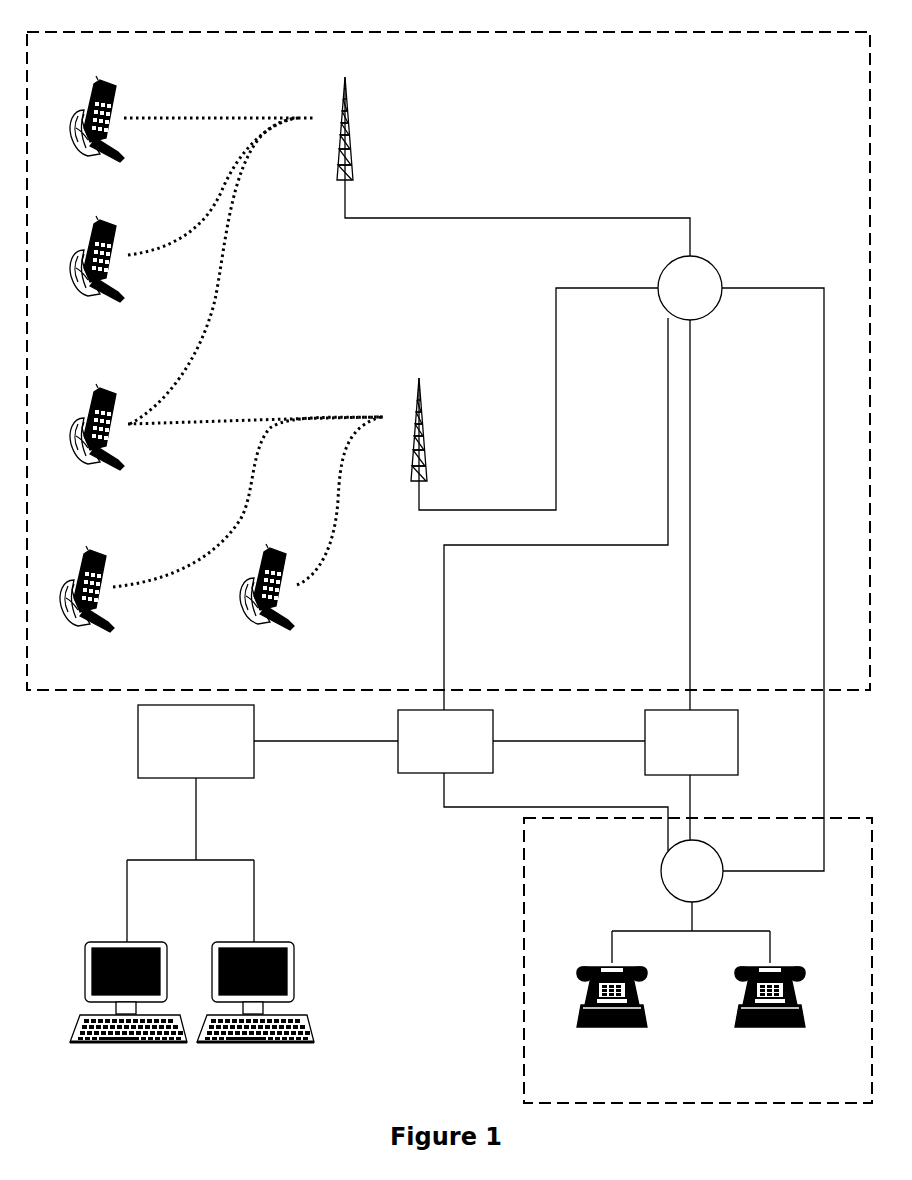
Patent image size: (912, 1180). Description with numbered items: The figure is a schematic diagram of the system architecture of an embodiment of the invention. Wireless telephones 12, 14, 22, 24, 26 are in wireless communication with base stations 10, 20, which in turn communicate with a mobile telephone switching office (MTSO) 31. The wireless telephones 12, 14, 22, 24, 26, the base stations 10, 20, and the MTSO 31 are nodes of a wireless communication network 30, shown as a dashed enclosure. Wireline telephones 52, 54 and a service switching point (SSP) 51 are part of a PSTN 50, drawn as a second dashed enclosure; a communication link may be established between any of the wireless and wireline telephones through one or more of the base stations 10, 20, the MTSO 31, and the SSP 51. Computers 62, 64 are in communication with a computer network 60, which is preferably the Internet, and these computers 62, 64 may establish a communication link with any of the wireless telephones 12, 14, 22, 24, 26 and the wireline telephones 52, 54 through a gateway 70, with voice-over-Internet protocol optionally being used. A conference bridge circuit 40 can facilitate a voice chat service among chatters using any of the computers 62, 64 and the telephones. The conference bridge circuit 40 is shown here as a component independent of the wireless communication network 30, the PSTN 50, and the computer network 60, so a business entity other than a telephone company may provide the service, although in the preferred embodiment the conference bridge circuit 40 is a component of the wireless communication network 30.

The base station 10 is at (348, 137).
The wireless telephone 12 is at (95, 80).
The wireless telephone 14 is at (95, 220).
The base station 20 is at (422, 437).
The wireless telephone 22 is at (95, 388).
The wireless telephone 24 is at (85, 550).
The wireless telephone 26 is at (265, 546).
The wireless communication network 30 is at (448, 32).
The mobile telephone switching office 31 is at (713, 262).
The conference bridge circuit 40 is at (740, 742).
The PSTN 50 is at (524, 956).
The service switching point 51 is at (660, 872).
The wireline telephone 52 is at (612, 1028).
The wireline telephone 54 is at (770, 1028).
The computer network 60 is at (135, 741).
The computer 62 is at (128, 1048).
The computer 64 is at (255, 1048).
The gateway 70 is at (477, 773).